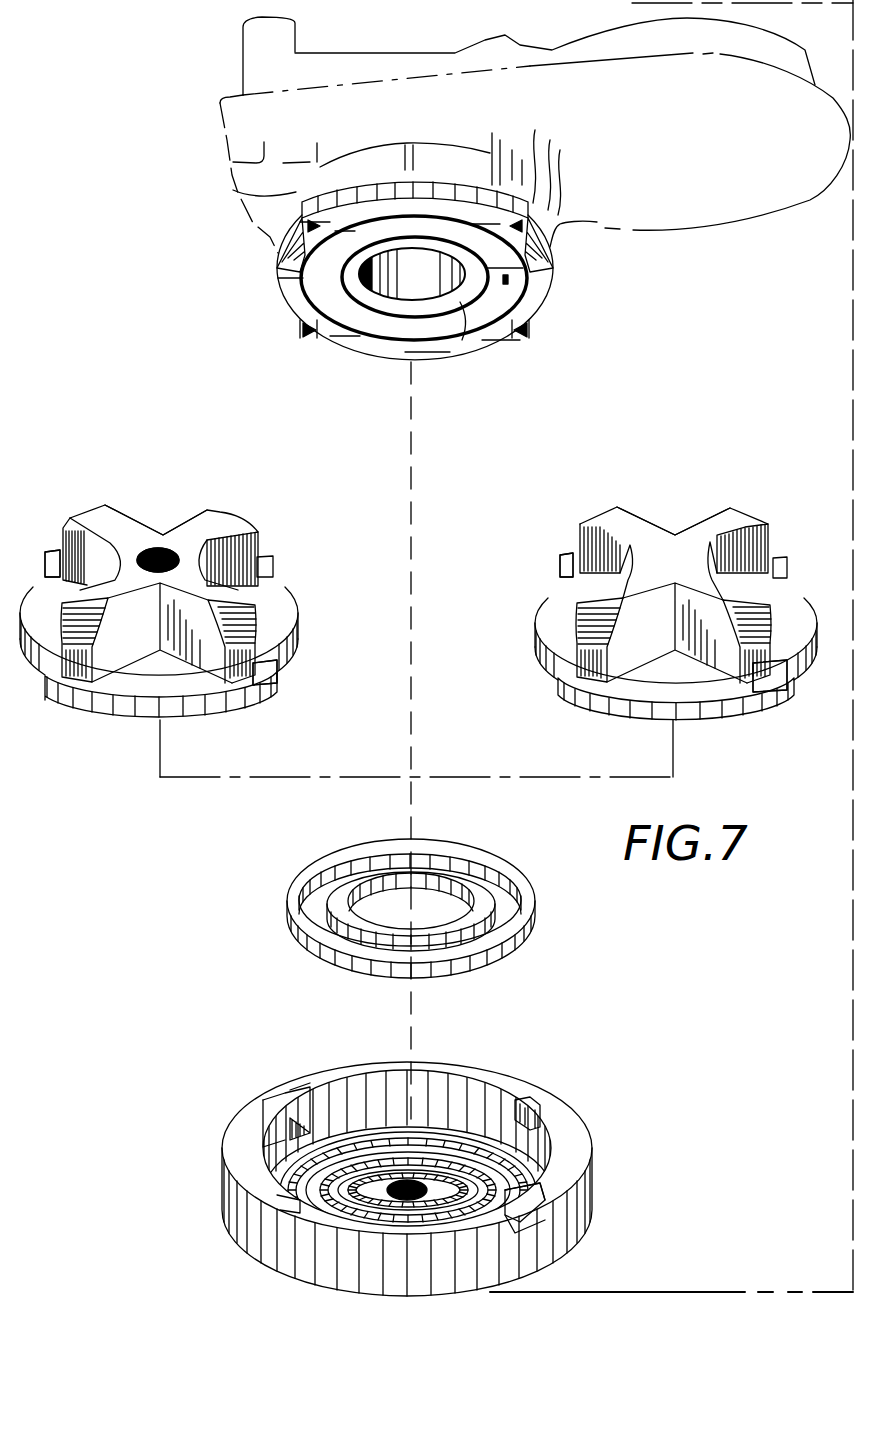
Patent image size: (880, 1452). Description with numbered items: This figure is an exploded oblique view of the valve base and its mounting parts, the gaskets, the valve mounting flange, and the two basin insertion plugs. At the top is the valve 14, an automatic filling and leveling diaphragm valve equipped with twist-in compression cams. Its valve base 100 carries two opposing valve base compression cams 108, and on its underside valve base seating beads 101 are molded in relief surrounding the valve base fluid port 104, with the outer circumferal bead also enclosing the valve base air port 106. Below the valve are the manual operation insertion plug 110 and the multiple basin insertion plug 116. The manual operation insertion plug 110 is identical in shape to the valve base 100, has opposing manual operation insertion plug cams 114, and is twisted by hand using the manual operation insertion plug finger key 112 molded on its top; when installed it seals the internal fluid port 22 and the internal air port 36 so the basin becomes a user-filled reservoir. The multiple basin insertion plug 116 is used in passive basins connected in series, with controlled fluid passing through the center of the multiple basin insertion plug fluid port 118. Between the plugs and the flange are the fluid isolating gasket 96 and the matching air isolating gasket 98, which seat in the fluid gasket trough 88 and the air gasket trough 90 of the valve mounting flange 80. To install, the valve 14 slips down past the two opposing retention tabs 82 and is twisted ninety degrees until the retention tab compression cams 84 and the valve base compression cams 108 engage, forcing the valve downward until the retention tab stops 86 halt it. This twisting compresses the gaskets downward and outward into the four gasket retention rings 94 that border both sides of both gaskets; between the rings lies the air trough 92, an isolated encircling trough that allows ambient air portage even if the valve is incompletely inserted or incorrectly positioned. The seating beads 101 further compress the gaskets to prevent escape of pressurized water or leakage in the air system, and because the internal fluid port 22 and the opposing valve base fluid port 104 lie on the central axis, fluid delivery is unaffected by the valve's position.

The valve 14 is at (213, 112).
The valve base 100 is at (553, 286).
The valve base seating beads 101 is at (465, 305).
The valve base fluid port 104 is at (432, 300).
The valve base air port 106 is at (523, 268).
The valve base compression cam 108 is at (530, 203).
The manual operation insertion plug 110 is at (518, 604).
The manual operation insertion plug finger key 112 is at (255, 528).
The manual operation insertion plug cam 114 is at (60, 537).
The multiple basin insertion plug 116 is at (318, 613).
The multiple basin insertion plug fluid port 118 is at (163, 535).
The fluid isolating gasket 96 is at (522, 903).
The air isolating gasket 98 is at (338, 902).
The valve mounting flange 80 is at (540, 1067).
The retention tabs 82 is at (552, 1123).
The retention tab compression cam 84 is at (300, 1107).
The retention tab stop 86 is at (263, 1147).
The fluid gasket trough 88 is at (365, 1137).
The air gasket trough 90 is at (415, 1150).
The air trough 92 is at (467, 1147).
The gasket retention rings 94 is at (310, 1103).
The internal air port 36 is at (540, 1182).
The internal fluid port 22 is at (396, 1188).